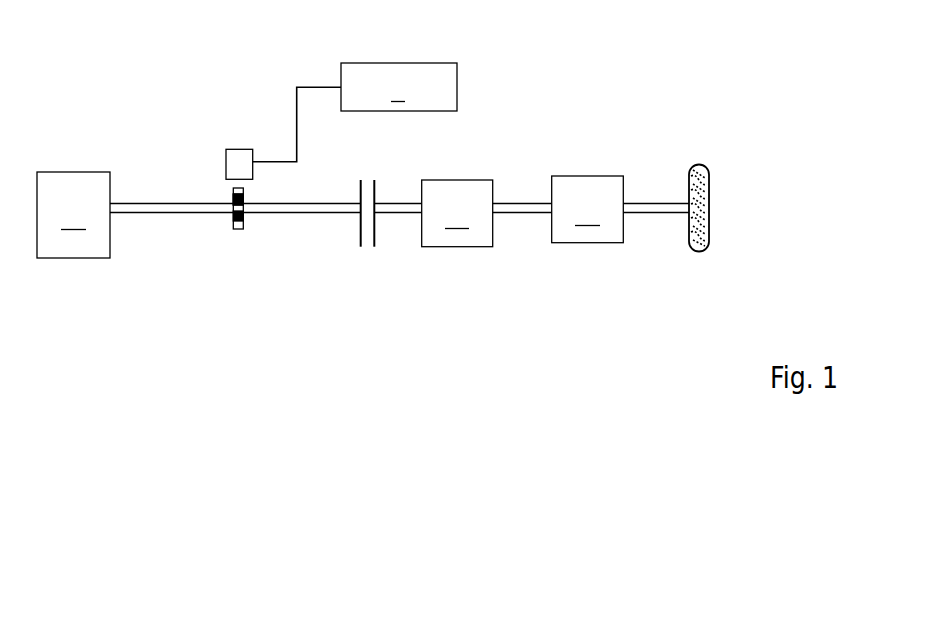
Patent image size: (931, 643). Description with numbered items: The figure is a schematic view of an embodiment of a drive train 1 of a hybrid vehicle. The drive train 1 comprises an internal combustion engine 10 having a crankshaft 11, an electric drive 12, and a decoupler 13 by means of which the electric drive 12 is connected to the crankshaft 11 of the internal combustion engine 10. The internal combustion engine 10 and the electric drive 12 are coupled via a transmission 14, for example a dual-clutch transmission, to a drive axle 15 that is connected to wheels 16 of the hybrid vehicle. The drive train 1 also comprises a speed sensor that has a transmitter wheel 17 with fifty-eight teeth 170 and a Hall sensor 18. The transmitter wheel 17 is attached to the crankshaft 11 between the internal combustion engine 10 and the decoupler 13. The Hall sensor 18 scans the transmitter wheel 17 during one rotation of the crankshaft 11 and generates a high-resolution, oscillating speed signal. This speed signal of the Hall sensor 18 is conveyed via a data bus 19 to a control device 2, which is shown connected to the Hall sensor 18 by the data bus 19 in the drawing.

The drive train 1 is at (137, 77).
The control device 2 is at (399, 87).
The internal combustion engine 10 is at (73, 215).
The crankshaft 11 is at (179, 215).
The electric drive 12 is at (487, 213).
The decoupler 13 is at (367, 250).
The transmission 14 is at (588, 209).
The drive axle 15 is at (672, 202).
The wheels 16 is at (698, 255).
The transmitter wheel 17 is at (238, 231).
The Hall sensor 18 is at (237, 148).
The data bus 19 is at (307, 86).
The teeth 170 is at (233, 197).